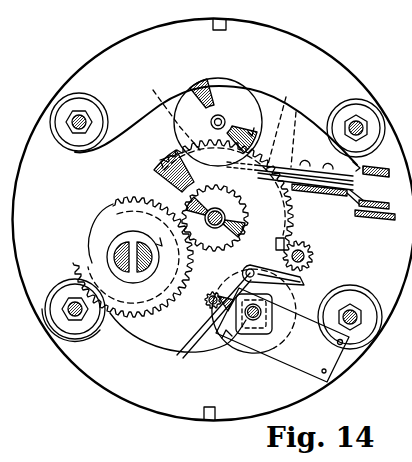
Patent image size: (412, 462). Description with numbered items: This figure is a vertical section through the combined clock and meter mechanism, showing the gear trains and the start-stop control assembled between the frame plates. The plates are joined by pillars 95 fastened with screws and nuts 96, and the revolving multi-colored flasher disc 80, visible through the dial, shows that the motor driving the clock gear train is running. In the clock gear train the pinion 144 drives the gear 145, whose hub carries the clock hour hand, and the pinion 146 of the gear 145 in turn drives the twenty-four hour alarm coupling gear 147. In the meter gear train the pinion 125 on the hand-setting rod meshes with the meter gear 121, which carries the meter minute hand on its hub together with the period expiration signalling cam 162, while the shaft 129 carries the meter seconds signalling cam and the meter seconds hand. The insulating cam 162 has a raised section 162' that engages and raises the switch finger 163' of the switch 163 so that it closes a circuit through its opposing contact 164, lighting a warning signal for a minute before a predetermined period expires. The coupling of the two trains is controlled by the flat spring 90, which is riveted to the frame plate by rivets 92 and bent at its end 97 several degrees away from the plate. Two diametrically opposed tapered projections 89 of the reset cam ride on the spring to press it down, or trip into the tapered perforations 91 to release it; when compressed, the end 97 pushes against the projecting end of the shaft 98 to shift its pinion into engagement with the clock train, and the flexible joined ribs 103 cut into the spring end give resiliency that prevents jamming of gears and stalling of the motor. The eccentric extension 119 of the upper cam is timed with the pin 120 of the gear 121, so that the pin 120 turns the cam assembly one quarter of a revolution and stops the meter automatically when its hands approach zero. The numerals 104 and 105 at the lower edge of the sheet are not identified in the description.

The flasher disc 80 is at (231, 100).
The switch finger 163' is at (216, 119).
The switch 163 is at (340, 159).
The opposing contact 164 is at (298, 172).
The period expiration signalling cam 162 is at (158, 165).
The raised section 162' is at (160, 140).
The pinion 146 is at (186, 203).
The gear 145 is at (284, 211).
The pinion 144 is at (303, 247).
The pinion 125 is at (312, 254).
The shaft 129 is at (216, 228).
The twenty-four hour alarm coupling gear 147 is at (100, 266).
The pin 120 is at (306, 280).
The meter gear 121 is at (340, 284).
The tapered projections 89 is at (237, 323).
The flat spring 90 is at (306, 361).
The tapered perforations 91 is at (250, 318).
The rivets 92 is at (326, 371).
The pillars 95 is at (66, 315).
The screws and nuts 96 is at (72, 320).
The spring end 97 is at (208, 301).
The shaft 98 is at (210, 308).
The flexible joined ribs 103 is at (190, 349).
The eccentric extension 119 is at (257, 345).
The element of adjacent figure 104 is at (233, 457).
The element of adjacent figure 105 is at (289, 457).